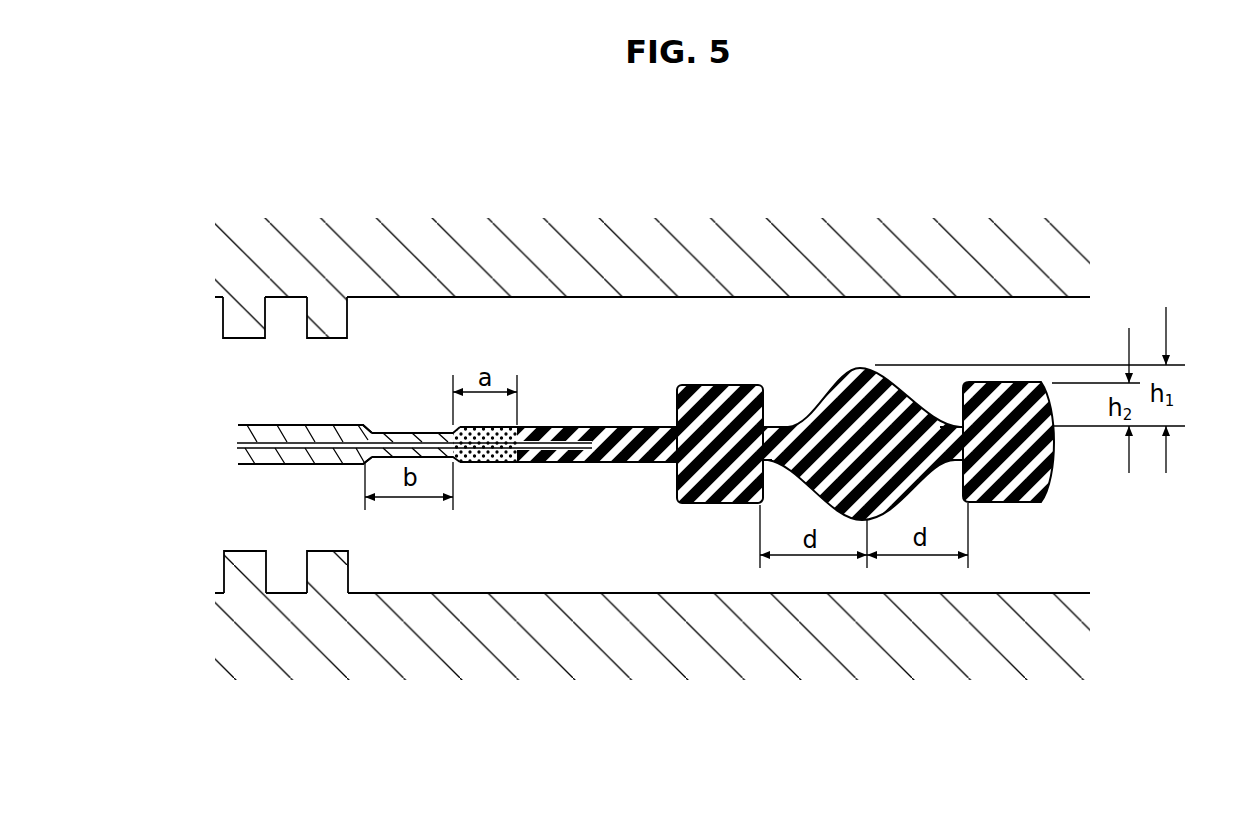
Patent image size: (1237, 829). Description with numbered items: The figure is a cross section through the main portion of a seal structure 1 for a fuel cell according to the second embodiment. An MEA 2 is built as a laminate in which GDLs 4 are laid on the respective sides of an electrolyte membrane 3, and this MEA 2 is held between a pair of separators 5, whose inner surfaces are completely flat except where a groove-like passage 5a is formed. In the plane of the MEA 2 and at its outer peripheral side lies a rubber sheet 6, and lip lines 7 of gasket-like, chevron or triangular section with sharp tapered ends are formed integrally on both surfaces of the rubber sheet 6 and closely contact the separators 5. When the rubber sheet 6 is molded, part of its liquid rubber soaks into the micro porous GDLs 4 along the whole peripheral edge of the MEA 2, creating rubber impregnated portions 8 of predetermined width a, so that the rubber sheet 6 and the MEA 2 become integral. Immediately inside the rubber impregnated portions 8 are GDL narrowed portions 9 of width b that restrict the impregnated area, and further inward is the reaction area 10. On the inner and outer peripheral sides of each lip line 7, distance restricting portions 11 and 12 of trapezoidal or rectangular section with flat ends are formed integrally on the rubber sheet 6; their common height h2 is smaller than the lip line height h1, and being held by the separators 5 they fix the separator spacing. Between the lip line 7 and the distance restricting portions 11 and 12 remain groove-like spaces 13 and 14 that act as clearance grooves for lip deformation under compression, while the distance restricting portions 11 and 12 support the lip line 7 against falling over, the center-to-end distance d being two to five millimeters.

The seal structure 1 is at (1067, 327).
The MEA 2 is at (306, 329).
The electrolyte membrane 3 is at (237, 444).
The GDL 4 is at (242, 436).
The separator 5 is at (677, 422).
The groove-like passage 5a is at (286, 308).
The rubber sheet 6 is at (598, 426).
The lip line 7 is at (857, 368).
The rubber impregnated portion 8 is at (500, 460).
The GDL narrowed portion 9 is at (377, 432).
The reaction area 10 is at (320, 438).
The distance restricting portion 11 is at (712, 385).
The distance restricting portion 12 is at (998, 393).
The groove-like space 13 is at (783, 412).
The groove-like space 14 is at (935, 400).